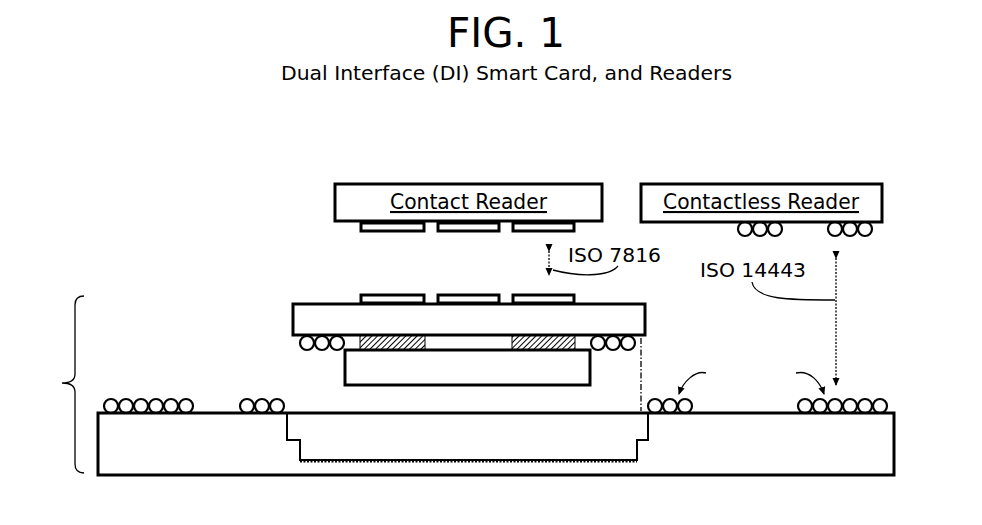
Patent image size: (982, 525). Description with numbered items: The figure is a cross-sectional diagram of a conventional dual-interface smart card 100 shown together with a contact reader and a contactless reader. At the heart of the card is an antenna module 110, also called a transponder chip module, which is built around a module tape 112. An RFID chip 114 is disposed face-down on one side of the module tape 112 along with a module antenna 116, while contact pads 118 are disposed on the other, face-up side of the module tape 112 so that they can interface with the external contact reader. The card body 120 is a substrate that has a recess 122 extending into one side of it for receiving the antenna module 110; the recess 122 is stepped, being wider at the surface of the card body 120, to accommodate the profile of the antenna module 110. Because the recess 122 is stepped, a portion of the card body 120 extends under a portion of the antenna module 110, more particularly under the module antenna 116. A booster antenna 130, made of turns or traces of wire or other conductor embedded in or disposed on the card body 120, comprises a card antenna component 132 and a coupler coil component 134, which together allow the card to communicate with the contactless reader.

The smart card 100 is at (219, 241).
The antenna module 110 is at (655, 372).
The module tape 112 is at (469, 319).
The RFID chip 114 is at (467, 367).
The module antenna 116 is at (323, 356).
The contact pads 118 is at (530, 292).
The card body 120 is at (496, 444).
The recess 122 is at (467, 437).
The booster antenna 130 is at (178, 351).
The card antenna component 132 is at (169, 398).
The coupler coil component 134 is at (250, 398).